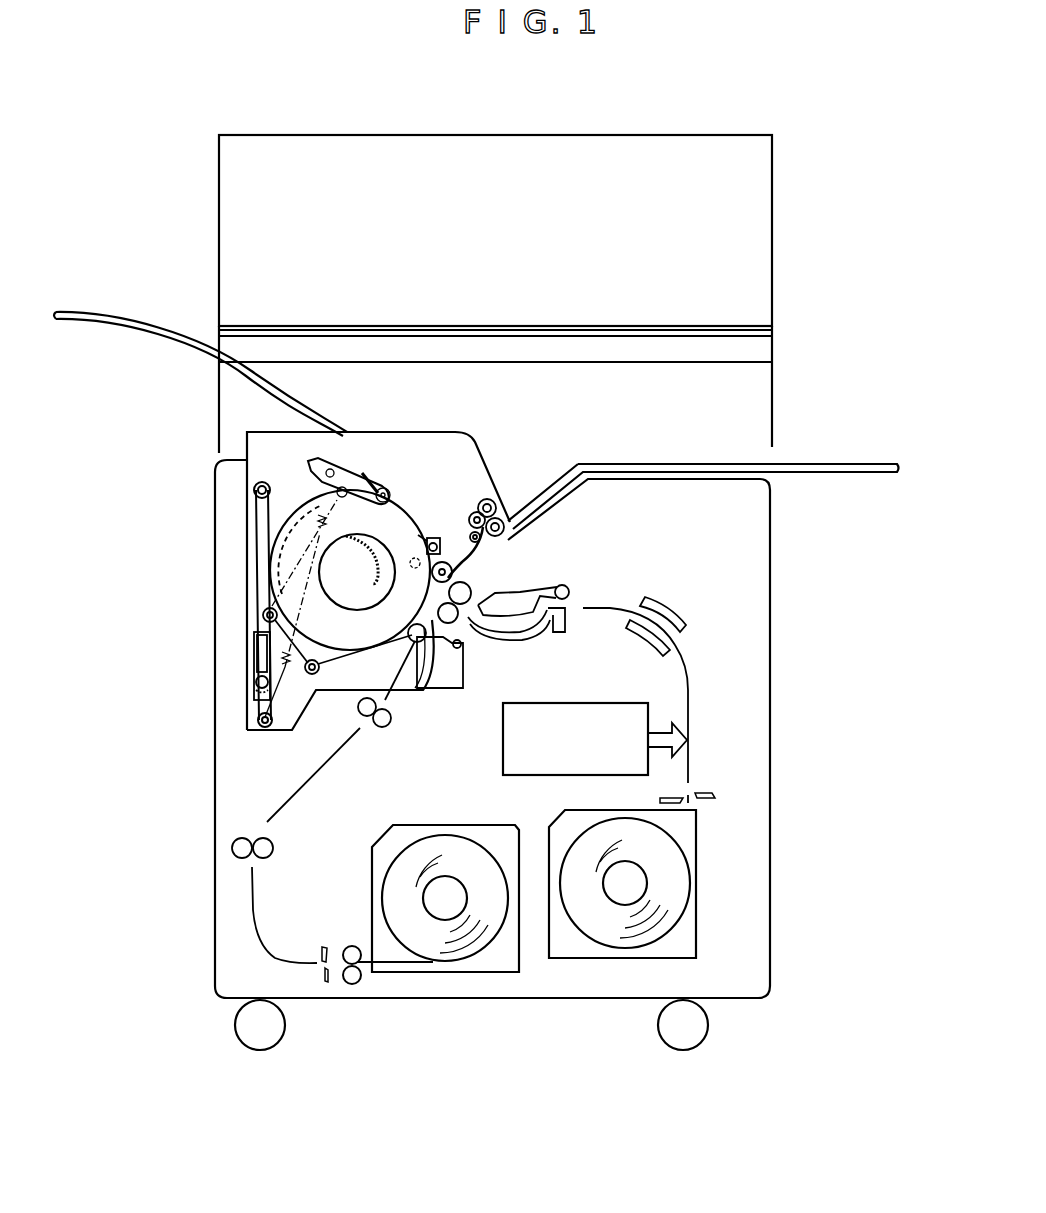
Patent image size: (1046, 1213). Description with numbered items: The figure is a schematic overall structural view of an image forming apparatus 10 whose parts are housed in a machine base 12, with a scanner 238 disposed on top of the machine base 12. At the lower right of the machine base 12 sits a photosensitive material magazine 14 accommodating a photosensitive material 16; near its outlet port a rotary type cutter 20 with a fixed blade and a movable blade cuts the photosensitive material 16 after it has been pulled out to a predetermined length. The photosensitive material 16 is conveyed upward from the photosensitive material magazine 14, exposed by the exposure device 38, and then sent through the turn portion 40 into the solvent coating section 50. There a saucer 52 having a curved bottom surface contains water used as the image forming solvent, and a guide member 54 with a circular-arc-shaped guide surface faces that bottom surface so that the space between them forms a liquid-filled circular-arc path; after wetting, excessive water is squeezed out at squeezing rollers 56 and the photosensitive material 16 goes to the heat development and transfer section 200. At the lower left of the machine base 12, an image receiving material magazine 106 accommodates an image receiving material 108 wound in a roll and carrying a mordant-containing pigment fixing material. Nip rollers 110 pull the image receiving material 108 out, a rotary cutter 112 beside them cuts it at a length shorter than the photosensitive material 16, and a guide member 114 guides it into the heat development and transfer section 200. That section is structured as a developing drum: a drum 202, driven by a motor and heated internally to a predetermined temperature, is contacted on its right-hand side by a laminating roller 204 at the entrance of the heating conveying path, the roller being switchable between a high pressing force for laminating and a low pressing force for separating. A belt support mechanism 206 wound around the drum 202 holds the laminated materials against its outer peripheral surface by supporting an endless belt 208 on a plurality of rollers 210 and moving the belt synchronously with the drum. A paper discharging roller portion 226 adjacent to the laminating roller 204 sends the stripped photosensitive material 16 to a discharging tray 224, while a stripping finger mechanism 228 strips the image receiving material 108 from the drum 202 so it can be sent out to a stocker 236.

The image forming apparatus 10 is at (691, 100).
The machine base 12 is at (774, 727).
The photosensitive material magazine 14 is at (687, 928).
The photosensitive material 16 is at (612, 927).
The cutter 20 is at (714, 796).
The exposure device 38 is at (580, 718).
The turn portion 40 is at (670, 610).
The solvent coating section 50 is at (587, 582).
The saucer 52 is at (533, 618).
The guide member 54 is at (468, 587).
The squeezing rollers 56 is at (540, 594).
The image receiving material magazine 106 is at (497, 962).
The image receiving material 108 is at (462, 943).
The nip rollers 110 is at (353, 985).
The cutter 112 is at (325, 984).
The guide member 114 is at (423, 657).
The heat development and transfer section 200 is at (424, 415).
The drum 202 is at (394, 525).
The laminating roller 204 is at (452, 555).
The belt support mechanism 206 is at (252, 545).
The endless belt 208 is at (260, 598).
The rollers 210 is at (317, 690).
The discharging tray 224 is at (808, 463).
The paper discharging roller portion 226 is at (478, 511).
The stripping finger mechanism 228 is at (352, 470).
The stocker 236 is at (118, 310).
The scanner 238 is at (380, 147).